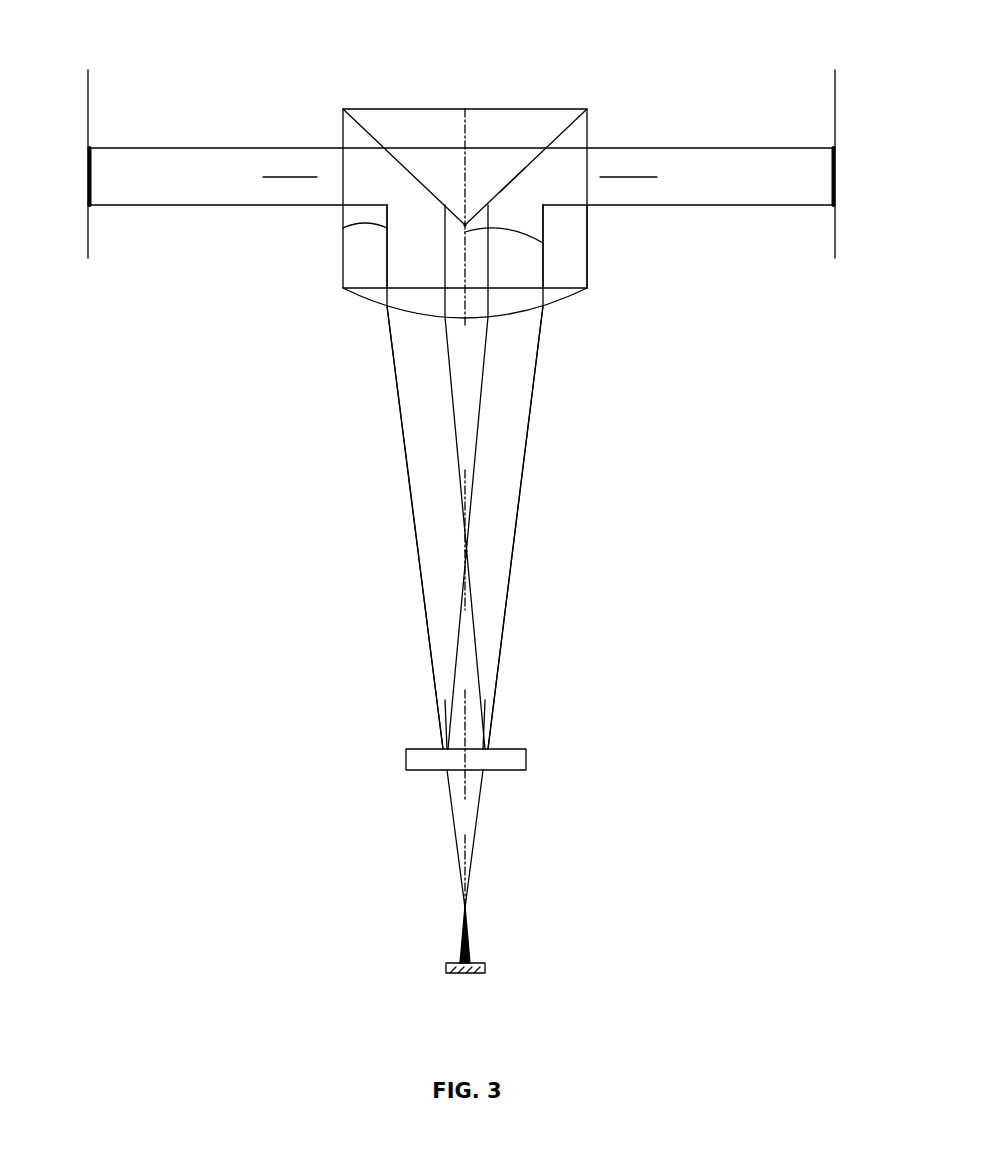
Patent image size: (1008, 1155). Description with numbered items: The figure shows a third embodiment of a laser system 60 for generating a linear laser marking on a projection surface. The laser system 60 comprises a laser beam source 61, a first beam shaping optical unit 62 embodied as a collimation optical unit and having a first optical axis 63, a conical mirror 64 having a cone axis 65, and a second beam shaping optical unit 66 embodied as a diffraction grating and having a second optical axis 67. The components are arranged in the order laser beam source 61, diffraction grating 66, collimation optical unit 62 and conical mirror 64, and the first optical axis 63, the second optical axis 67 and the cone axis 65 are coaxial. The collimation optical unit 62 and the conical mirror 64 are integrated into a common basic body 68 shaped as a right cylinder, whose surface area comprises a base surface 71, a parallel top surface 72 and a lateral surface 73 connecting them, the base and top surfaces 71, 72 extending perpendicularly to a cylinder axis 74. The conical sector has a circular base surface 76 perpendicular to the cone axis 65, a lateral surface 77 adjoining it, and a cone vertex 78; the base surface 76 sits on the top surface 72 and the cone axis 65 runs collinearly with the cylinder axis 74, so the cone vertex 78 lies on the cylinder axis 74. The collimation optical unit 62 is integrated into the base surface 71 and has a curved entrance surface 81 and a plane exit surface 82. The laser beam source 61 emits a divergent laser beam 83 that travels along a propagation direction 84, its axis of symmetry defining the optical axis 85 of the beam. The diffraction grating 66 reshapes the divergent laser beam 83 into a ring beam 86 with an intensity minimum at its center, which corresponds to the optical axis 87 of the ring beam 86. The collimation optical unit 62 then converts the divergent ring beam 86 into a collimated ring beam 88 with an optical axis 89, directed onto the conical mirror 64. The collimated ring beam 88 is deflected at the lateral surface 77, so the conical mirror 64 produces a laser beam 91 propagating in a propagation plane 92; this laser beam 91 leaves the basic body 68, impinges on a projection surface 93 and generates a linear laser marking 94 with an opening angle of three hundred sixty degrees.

The laser system 60 is at (742, 942).
The laser beam source 61 is at (332, 952).
The first beam shaping optical unit 62 is at (625, 298).
The first optical axis 63 is at (470, 297).
The conical mirror 64 is at (459, 82).
The cone axis 65 is at (462, 137).
The second beam shaping optical unit 66 is at (332, 762).
The second optical axis 67 is at (475, 712).
The basic body 68 is at (322, 278).
The base surface 71 is at (574, 293).
The top surface 72 is at (578, 108).
The lateral surface 73 is at (590, 265).
The cylinder axis 74 is at (455, 251).
The base surface 76 is at (365, 108).
The lateral surface 77 is at (500, 178).
The cone vertex 78 is at (460, 213).
The curved entrance surface 81 is at (482, 318).
The plane exit surface 82 is at (365, 292).
The divergent laser beam 83 is at (447, 832).
The propagation direction 84 is at (462, 928).
The optical axis 85 is at (473, 861).
The ring beam 86 is at (400, 433).
The optical axis 87 is at (466, 502).
The collimated ring beam 88 is at (343, 228).
The optical axis 89 is at (543, 243).
The laser beam 91 is at (222, 148).
The propagation plane 92 is at (295, 177).
The projection surface 93 is at (90, 90).
The linear laser marking 94 is at (92, 178).